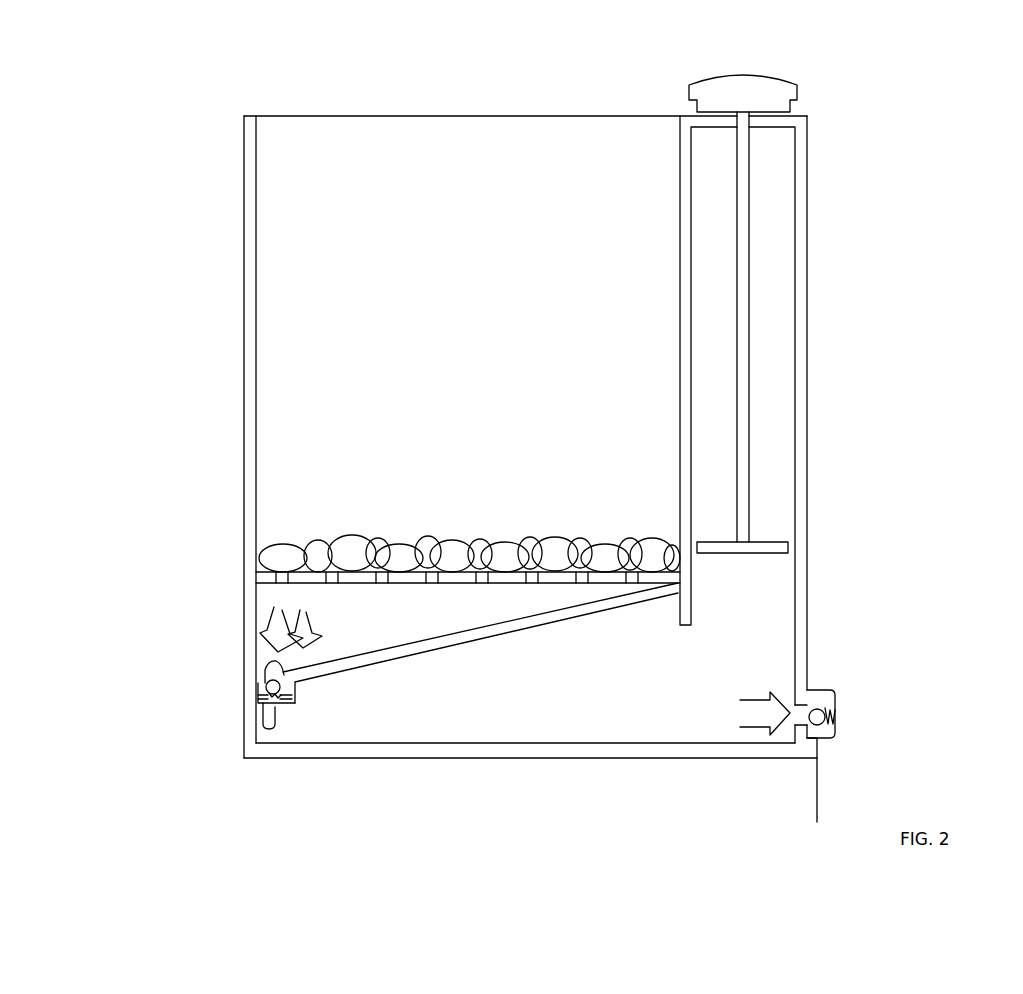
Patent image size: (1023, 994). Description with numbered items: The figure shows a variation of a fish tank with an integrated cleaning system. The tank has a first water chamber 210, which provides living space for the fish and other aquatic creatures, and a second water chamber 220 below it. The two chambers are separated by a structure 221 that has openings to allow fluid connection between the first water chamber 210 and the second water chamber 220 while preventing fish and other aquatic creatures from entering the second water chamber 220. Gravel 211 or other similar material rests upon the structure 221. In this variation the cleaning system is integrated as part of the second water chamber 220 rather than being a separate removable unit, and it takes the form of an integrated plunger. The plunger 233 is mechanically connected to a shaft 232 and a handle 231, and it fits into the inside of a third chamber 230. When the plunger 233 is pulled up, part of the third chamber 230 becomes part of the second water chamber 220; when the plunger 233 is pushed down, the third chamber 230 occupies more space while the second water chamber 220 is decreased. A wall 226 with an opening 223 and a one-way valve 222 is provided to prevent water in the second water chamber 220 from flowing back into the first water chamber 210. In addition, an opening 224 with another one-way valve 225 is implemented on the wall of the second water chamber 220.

The first water chamber 210 is at (289, 240).
The gravel 211 is at (278, 542).
The second water chamber 220 is at (585, 728).
The structure 221 is at (265, 577).
The one-way valve 222 is at (262, 727).
The opening 223 is at (265, 662).
The opening 224 is at (810, 705).
The one-way valve 225 is at (820, 740).
The wall 226 is at (378, 665).
The third chamber 230 is at (777, 308).
The handle 231 is at (766, 88).
The shaft 232 is at (742, 177).
The plunger 233 is at (778, 548).